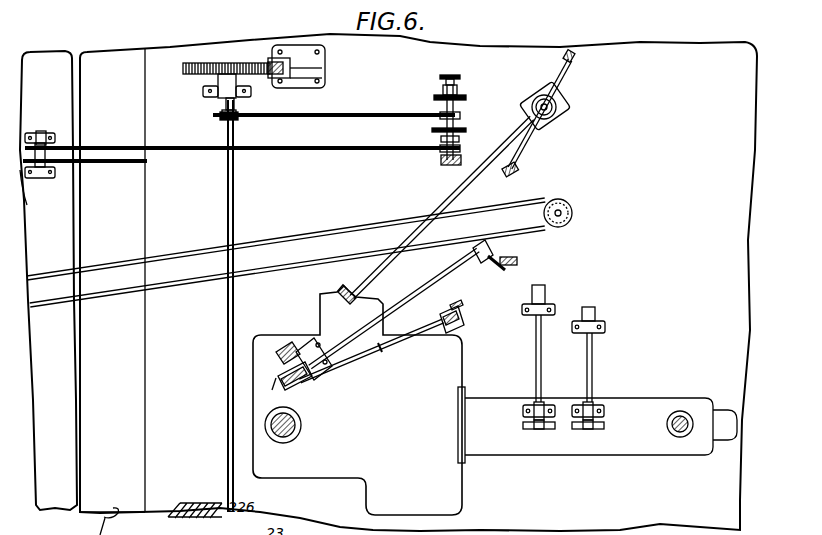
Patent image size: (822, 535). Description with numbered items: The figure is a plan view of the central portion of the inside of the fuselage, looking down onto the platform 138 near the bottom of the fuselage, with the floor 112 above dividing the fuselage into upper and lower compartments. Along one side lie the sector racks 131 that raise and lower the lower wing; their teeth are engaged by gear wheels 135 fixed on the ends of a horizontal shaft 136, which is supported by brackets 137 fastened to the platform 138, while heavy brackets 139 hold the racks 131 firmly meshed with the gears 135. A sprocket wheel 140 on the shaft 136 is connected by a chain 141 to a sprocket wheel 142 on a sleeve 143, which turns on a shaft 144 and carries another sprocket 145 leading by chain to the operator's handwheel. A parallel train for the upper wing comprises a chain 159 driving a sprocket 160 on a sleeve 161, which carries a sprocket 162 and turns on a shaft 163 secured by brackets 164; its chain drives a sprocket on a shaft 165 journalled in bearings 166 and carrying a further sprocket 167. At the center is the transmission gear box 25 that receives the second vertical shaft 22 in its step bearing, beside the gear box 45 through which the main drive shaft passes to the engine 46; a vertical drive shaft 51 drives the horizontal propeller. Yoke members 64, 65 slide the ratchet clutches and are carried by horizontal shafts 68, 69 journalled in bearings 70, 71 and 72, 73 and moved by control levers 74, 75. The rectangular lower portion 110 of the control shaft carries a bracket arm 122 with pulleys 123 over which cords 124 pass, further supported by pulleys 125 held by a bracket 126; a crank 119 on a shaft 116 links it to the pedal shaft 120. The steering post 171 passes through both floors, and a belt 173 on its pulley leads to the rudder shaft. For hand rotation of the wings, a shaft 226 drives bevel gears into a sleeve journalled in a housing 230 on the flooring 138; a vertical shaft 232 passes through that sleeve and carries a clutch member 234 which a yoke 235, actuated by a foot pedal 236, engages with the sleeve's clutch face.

The platform 138 is at (733, 240).
The chain 159 is at (112, 165).
The sprocket 160 is at (37, 191).
The sleeve 161 is at (58, 136).
The sprocket 162 is at (28, 130).
The brackets 164 is at (40, 131).
The shaft 163 is at (52, 178).
The gear wheels 135 is at (230, 63).
The sector racks 131 is at (278, 60).
The heavy brackets 139 is at (327, 76).
The brackets 137 is at (205, 100).
The horizontal shaft 136 is at (227, 220).
The chain 141 is at (370, 114).
The sprocket wheel 140 is at (236, 121).
The bearings 166 is at (452, 75).
The sprocket 145 is at (458, 96).
The sleeve 143 is at (440, 98).
The sprocket wheel 142 is at (456, 103).
The shaft 144 is at (457, 116).
The sprocket 167 is at (432, 130).
The shaft 165 is at (458, 138).
The housing 230 is at (540, 90).
The vertical shaft 232 is at (572, 80).
The clutch member 234 is at (566, 102).
The yoke 235 is at (526, 154).
The foot pedal 236 is at (505, 153).
The shaft 226 is at (434, 205).
The belt 173 is at (322, 260).
The floor 112 is at (574, 214).
The vertical post 171 is at (567, 207).
The crank 119 is at (496, 252).
The pedal shaft 120 is at (518, 262).
The shaft 116 is at (447, 272).
The cords 124 is at (375, 346).
The pulleys 125 is at (464, 325).
The bracket 126 is at (457, 308).
The transmission gear box 25 is at (446, 477).
The lower portion of shaft 110 is at (290, 346).
The pulleys 123 is at (302, 382).
The bracket arm 122 is at (273, 396).
The second vertical shaft 22 is at (302, 425).
The gear box 45 is at (620, 451).
The engine 46 is at (739, 492).
The vertical drive shaft 51 is at (680, 436).
The bearing 72 is at (541, 403).
The yoke member 65 is at (543, 429).
The bearing 70 is at (600, 404).
The yoke member 64 is at (593, 429).
The horizontal shaft 69 is at (541, 360).
The horizontal shaft 68 is at (593, 357).
The bearing 73 is at (553, 305).
The control lever 75 is at (546, 290).
The bearing 71 is at (604, 325).
The control lever 74 is at (590, 306).